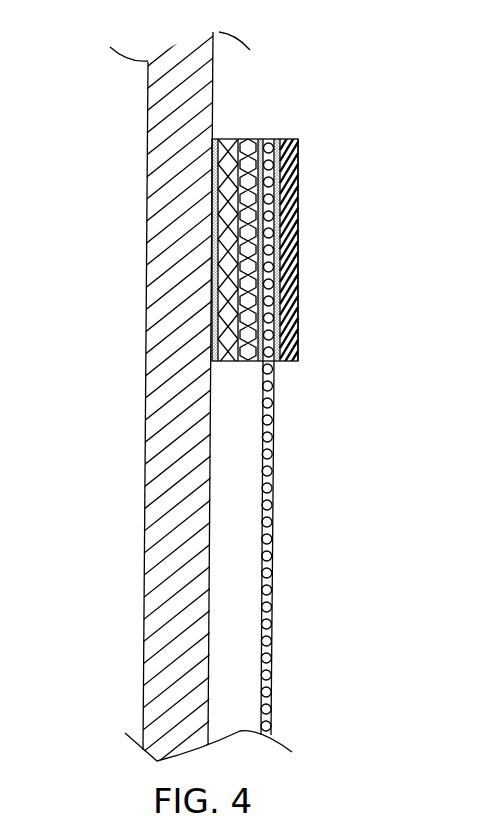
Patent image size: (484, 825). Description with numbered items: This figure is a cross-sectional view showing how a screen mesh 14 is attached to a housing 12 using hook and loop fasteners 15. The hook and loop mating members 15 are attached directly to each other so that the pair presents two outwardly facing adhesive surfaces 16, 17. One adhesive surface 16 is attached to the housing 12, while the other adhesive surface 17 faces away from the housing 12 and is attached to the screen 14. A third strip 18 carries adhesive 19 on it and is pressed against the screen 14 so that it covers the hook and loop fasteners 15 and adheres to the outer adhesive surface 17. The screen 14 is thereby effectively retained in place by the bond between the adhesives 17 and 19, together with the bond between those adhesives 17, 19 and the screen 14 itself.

The housing 12 is at (148, 92).
The screen mesh 14 is at (271, 570).
The hook and loop fasteners 15 is at (233, 132).
The adhesive surface 16 is at (212, 220).
The adhesive surface 17 is at (263, 136).
The third strip 18 is at (299, 325).
The adhesive 19 is at (275, 361).